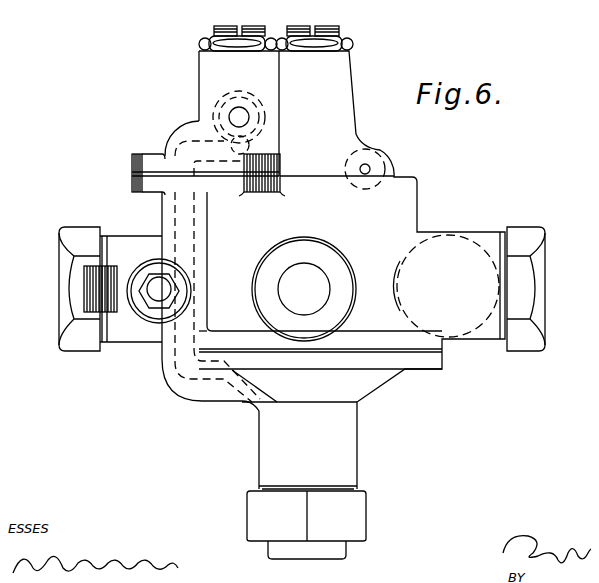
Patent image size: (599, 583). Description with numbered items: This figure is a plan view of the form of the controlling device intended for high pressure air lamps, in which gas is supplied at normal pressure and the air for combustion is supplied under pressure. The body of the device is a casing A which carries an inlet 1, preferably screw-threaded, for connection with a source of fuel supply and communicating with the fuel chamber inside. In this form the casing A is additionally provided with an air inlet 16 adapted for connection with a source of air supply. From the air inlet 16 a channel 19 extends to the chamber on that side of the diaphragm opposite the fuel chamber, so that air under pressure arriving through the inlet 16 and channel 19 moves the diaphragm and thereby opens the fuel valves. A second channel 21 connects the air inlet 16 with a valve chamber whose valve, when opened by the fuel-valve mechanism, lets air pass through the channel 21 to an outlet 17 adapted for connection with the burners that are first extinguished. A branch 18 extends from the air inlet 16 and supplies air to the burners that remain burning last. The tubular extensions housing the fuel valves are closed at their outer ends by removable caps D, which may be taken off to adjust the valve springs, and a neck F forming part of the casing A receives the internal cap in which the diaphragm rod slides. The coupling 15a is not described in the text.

The inlet 1 is at (304, 289).
The coupling nut 15a is at (357, 517).
The air inlet 16 is at (155, 297).
The outlet 17 is at (230, 112).
The branch 18 is at (92, 283).
The channel 19 is at (203, 390).
The second channel 21 is at (182, 152).
The casing A is at (433, 362).
The removable cap D is at (65, 293).
The neck F is at (343, 443).